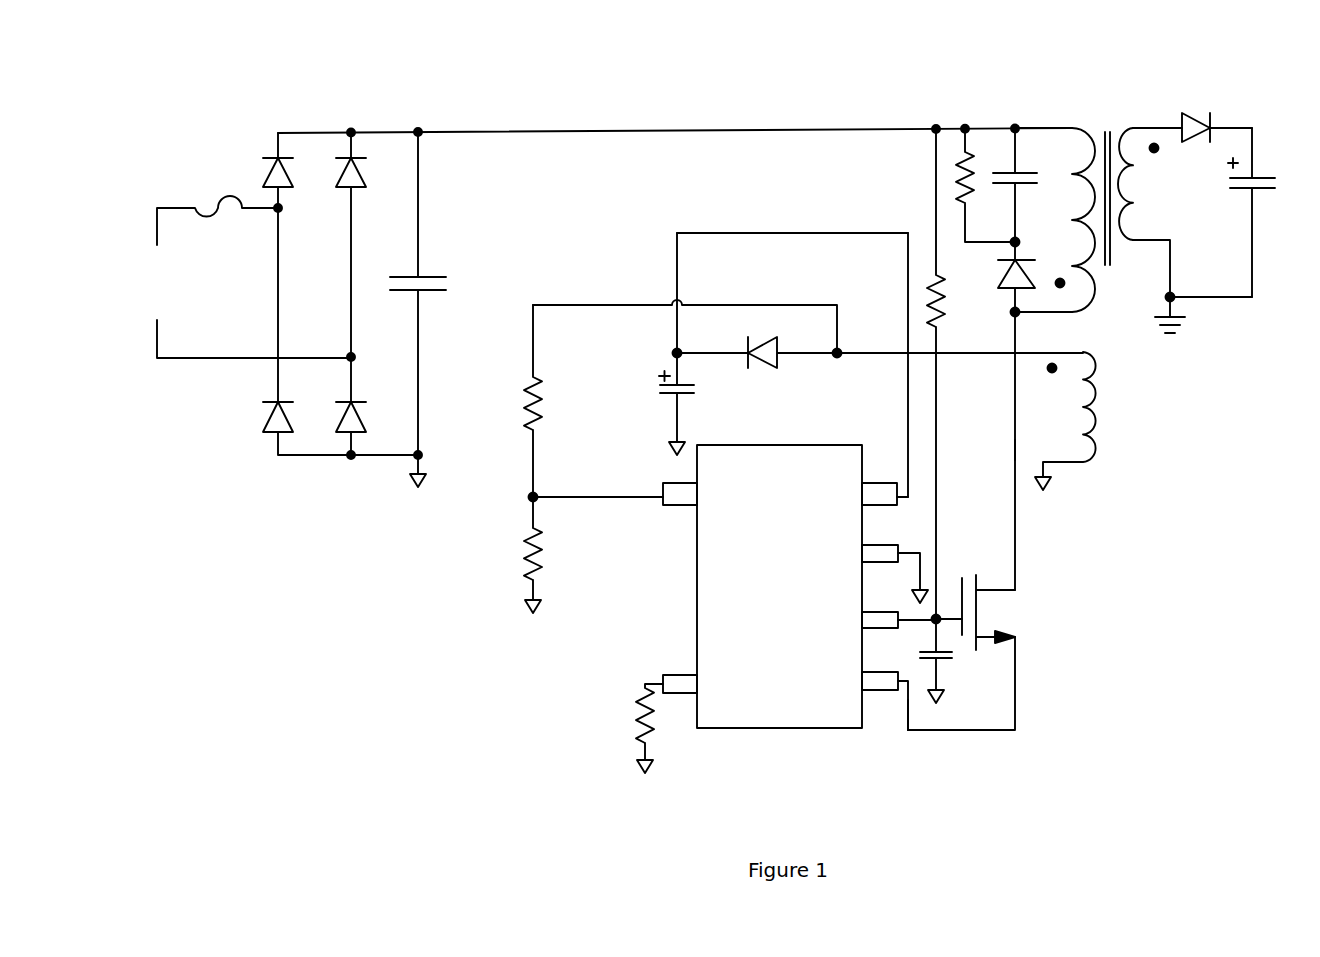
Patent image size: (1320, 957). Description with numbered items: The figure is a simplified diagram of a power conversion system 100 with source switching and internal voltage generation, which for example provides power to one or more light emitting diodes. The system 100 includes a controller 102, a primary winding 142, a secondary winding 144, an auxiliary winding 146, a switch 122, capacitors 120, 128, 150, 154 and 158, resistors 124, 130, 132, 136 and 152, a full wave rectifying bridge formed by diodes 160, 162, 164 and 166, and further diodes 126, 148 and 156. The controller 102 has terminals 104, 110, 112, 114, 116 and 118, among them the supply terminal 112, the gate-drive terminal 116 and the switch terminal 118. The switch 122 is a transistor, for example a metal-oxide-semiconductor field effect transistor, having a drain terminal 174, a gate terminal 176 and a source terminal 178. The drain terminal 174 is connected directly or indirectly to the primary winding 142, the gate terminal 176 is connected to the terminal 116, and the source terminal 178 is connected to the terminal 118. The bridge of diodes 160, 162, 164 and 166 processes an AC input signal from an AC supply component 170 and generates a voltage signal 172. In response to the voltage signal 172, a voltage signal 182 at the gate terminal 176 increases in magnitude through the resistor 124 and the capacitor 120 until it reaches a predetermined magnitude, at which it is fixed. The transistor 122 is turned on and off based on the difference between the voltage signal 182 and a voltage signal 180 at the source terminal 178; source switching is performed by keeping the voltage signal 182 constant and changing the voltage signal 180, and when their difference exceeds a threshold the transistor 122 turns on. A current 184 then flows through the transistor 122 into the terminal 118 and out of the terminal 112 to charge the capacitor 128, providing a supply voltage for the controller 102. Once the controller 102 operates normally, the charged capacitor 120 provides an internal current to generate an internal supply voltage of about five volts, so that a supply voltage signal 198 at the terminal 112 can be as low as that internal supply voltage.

The power conversion system 100 is at (349, 672).
The controller 102 is at (766, 728).
The terminal 104 is at (660, 484).
The terminal 110 is at (672, 675).
The terminal 112 is at (880, 483).
The terminal 114 is at (880, 545).
The terminal 116 is at (882, 612).
The terminal 118 is at (880, 672).
The capacitor 120 is at (942, 685).
The switch 122 is at (1000, 612).
The resistor 124 is at (946, 280).
The diode 126 is at (773, 368).
The capacitor 128 is at (689, 395).
The resistor 130 is at (540, 392).
The resistor 132 is at (546, 543).
The resistor 136 is at (647, 740).
The primary winding 142 is at (1072, 128).
The secondary winding 144 is at (1133, 128).
The auxiliary winding 146 is at (1098, 365).
The diode 148 is at (1192, 113).
The capacitor 150 is at (1240, 190).
The resistor 152 is at (972, 162).
The capacitor 154 is at (1022, 186).
The diode 156 is at (1030, 281).
The capacitor 158 is at (434, 292).
The diode 160 is at (348, 190).
The diode 162 is at (264, 172).
The diode 164 is at (264, 410).
The diode 166 is at (351, 402).
The AC supply component 170 is at (156, 307).
The voltage signal 172 is at (473, 132).
The terminal 174 is at (1017, 549).
The terminal 176 is at (961, 606).
The terminal 178 is at (1016, 676).
The voltage signal 180 is at (906, 732).
The voltage signal 182 is at (938, 619).
The current 184 is at (1015, 451).
The supply voltage signal 198 is at (908, 400).